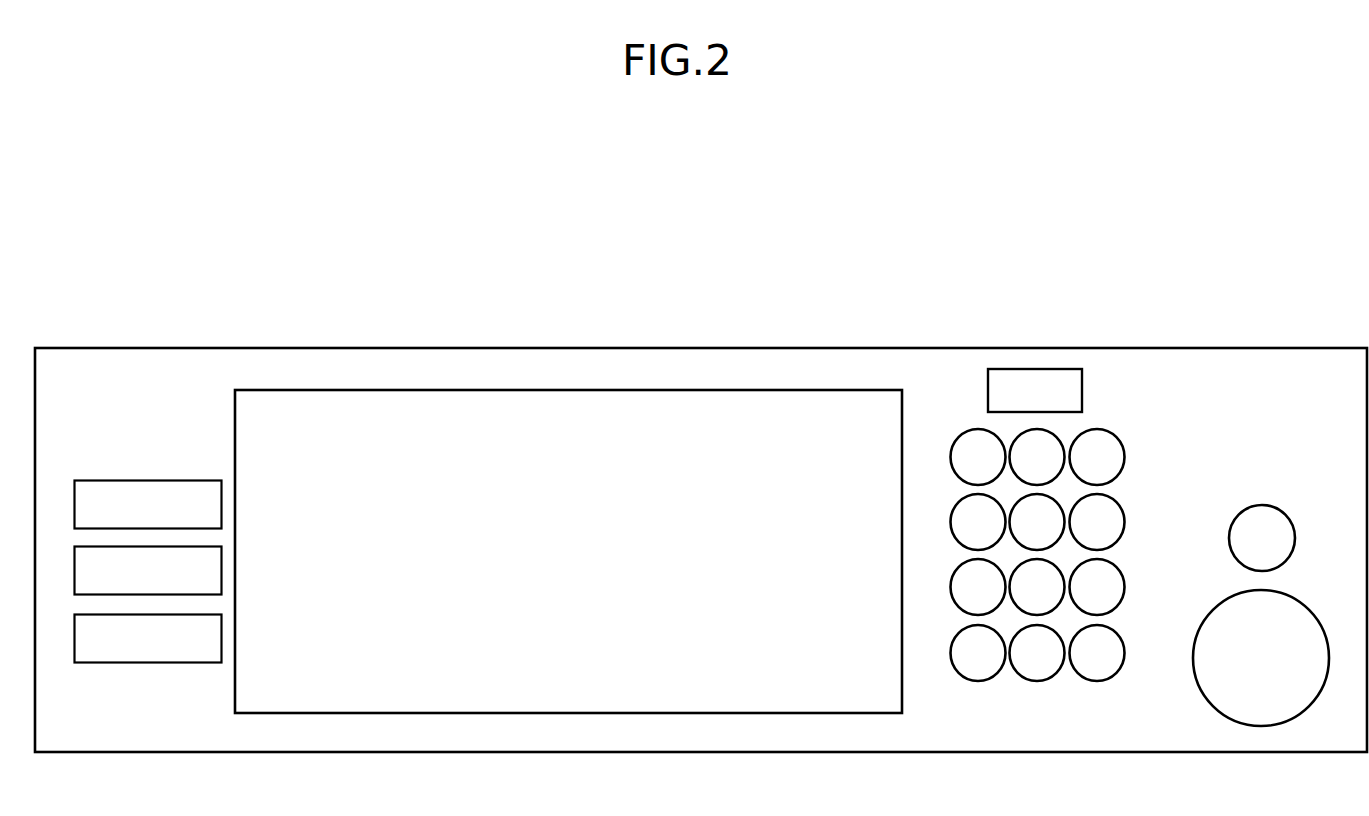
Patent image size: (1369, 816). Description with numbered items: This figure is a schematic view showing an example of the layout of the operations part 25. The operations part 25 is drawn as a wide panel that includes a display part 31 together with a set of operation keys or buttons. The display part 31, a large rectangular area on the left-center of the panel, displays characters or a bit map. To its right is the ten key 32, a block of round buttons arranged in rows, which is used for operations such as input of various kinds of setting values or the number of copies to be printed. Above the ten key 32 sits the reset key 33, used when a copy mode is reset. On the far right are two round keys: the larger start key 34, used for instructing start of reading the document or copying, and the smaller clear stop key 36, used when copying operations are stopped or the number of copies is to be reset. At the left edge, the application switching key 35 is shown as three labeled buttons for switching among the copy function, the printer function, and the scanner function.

The operations part 25 is at (578, 316).
The display part 31 is at (235, 693).
The ten key 32 is at (1137, 446).
The reset key 33 is at (1031, 368).
The start key 34 is at (1204, 692).
The application switching key 35 is at (124, 456).
The clear stop key 36 is at (1286, 512).